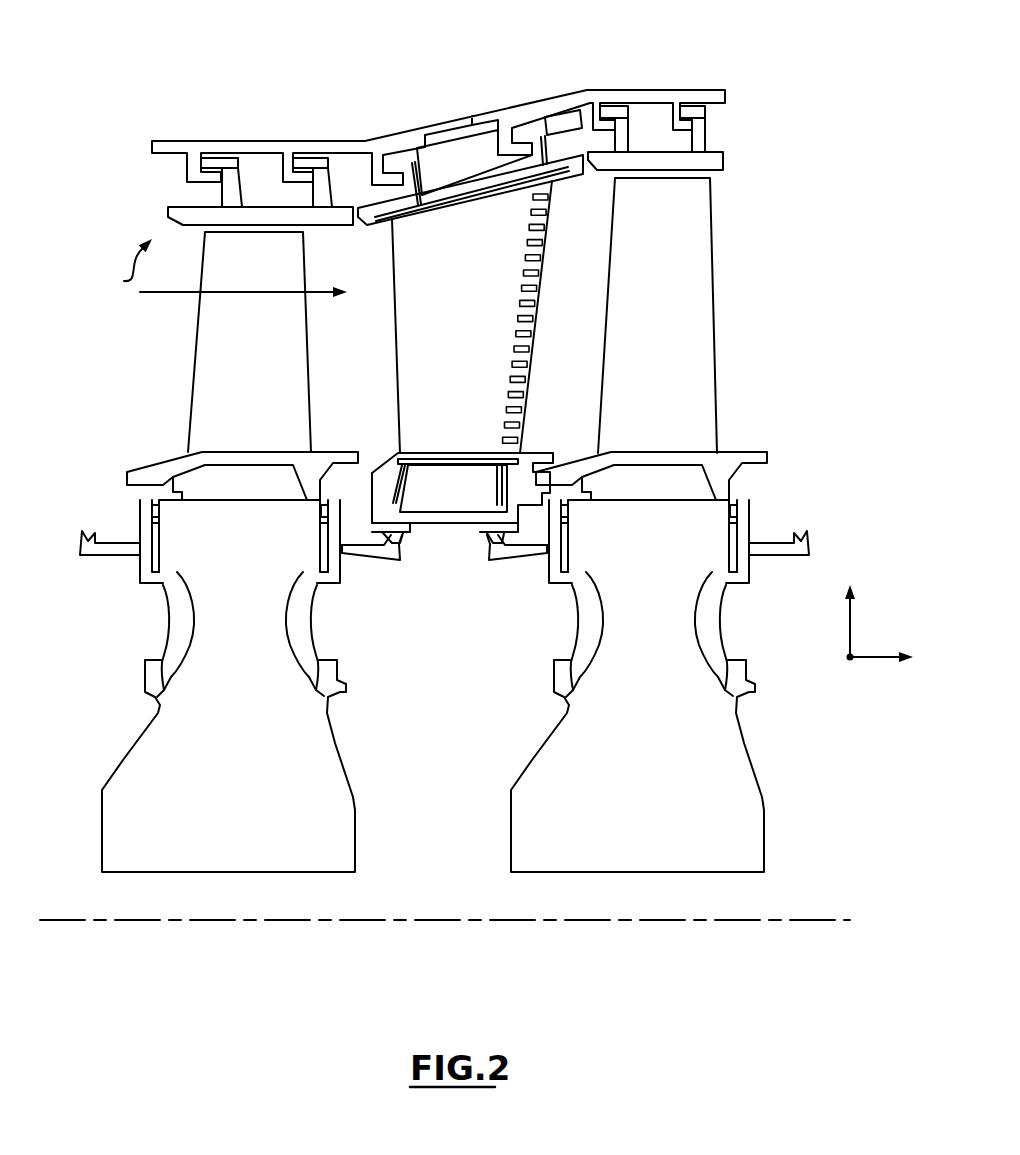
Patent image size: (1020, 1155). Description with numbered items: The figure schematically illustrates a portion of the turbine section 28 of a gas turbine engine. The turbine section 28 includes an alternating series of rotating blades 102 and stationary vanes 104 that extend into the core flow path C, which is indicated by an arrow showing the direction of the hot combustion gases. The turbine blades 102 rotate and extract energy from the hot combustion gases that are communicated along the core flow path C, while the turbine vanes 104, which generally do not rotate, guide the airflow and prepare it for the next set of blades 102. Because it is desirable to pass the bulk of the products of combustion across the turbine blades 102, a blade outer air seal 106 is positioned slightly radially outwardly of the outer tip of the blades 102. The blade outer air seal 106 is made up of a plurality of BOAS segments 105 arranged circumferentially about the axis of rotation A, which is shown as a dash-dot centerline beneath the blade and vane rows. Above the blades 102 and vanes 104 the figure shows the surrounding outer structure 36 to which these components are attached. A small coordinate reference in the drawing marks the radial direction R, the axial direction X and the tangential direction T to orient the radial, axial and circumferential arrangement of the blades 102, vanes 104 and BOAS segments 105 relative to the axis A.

The turbine section 28 is at (68, 80).
The outer vane platform / outer ring 36 is at (335, 135).
The rotating blades 102 is at (303, 368).
The stationary vanes 104 is at (472, 325).
The BOAS segment 105 is at (184, 214).
The blade outer air seal 106 is at (115, 267).
The core flow path C is at (153, 298).
The radial direction R is at (860, 613).
The axial direction X is at (892, 658).
The tangential direction T is at (850, 660).
The axis of rotation A is at (810, 923).